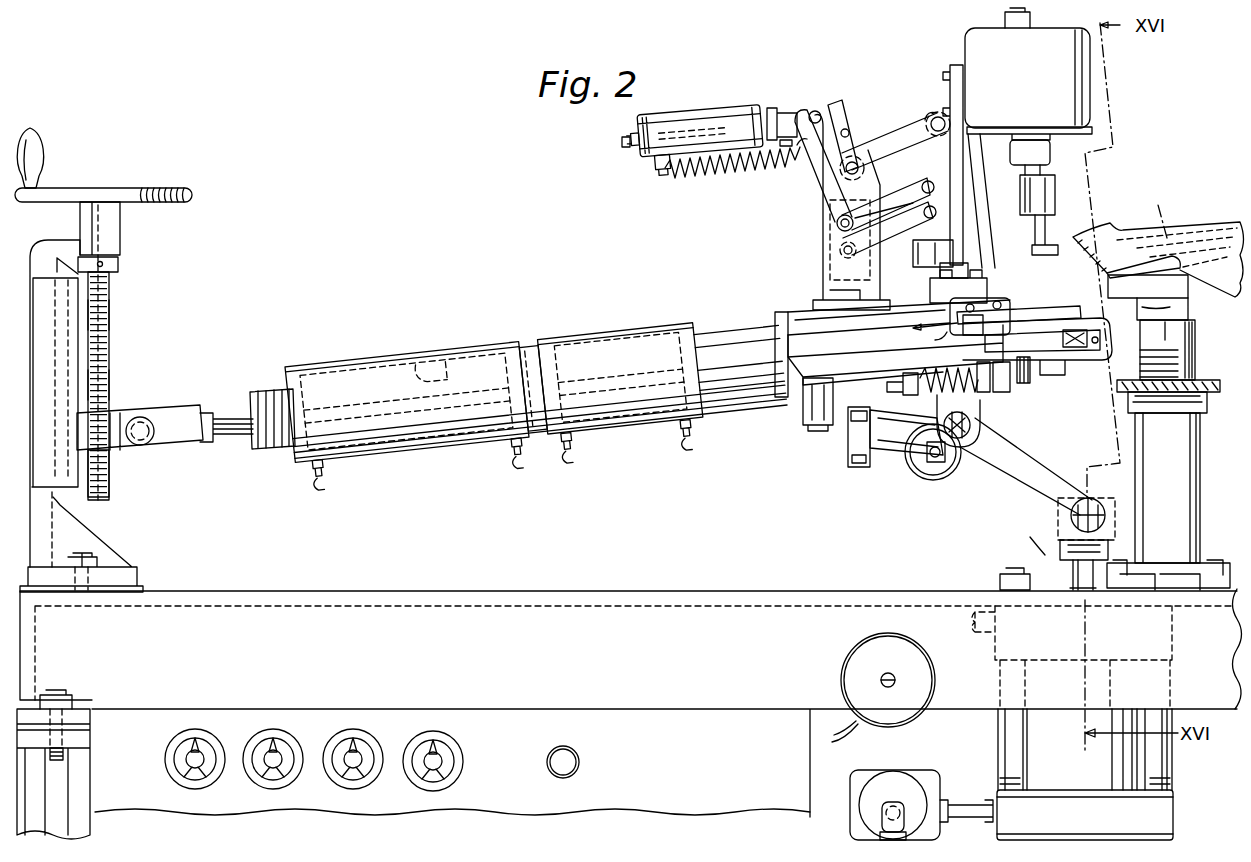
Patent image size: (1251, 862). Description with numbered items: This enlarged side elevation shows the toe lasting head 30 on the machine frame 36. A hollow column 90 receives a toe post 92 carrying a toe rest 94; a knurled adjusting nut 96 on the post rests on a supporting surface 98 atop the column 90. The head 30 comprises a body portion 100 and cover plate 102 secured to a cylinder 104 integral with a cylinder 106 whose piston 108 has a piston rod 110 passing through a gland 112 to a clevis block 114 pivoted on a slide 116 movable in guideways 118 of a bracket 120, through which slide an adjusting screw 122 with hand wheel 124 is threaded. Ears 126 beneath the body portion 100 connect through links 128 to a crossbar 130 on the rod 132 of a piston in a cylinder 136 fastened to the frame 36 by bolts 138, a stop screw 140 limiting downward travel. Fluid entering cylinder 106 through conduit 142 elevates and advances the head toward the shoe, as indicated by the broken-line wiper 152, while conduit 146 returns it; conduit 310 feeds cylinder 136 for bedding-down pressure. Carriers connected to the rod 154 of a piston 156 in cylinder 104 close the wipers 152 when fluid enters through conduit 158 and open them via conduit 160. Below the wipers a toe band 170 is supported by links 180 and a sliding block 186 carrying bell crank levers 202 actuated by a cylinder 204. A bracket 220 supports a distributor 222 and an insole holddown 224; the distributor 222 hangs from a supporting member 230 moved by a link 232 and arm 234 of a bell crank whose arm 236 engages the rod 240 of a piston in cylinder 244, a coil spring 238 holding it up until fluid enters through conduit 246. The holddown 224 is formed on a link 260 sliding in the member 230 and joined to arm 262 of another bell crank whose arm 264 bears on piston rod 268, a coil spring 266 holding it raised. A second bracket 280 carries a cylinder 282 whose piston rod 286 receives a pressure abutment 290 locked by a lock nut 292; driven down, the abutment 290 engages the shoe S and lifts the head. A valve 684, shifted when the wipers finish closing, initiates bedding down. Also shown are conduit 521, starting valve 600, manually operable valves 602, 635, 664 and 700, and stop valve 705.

The cutting head support block 30 is at (787, 407).
The base 36 is at (573, 659).
The column 90 is at (1150, 445).
The upper column member 92 is at (1193, 348).
The sheet support block 94 is at (1179, 272).
The flange 96 is at (1220, 382).
The collar 98 is at (1198, 400).
The slide carriage 100 is at (862, 351).
The upper slide 102 is at (867, 328).
The cylinder housing 104 is at (618, 362).
The cylinder housing 106 is at (535, 373).
The piston 108 is at (439, 346).
The shaft 110 is at (224, 404).
The knurled collar 112 is at (250, 390).
The clamp arm 114 is at (162, 402).
The clamp screw 116 is at (136, 452).
The adjusting screw 118 is at (98, 330).
The screw upper portion 120 is at (106, 302).
The screw lower portion 122 is at (106, 368).
The hand crank 124 is at (166, 198).
The link 126 is at (976, 440).
The link end 128 is at (1030, 535).
The ball joint 130 is at (1108, 503).
The ball joint block 132 is at (1106, 553).
The hydraulic cylinder 136 is at (1178, 762).
The mounting bolts 138 is at (1008, 571).
The rod 140 is at (1072, 572).
The mounting foot 142 is at (536, 451).
The mounting foot 146 is at (337, 472).
The guide 152 is at (1084, 318).
The piston rod 154 is at (736, 333).
The piston 156 is at (541, 361).
The mounting foot 158 is at (587, 445).
The mounting foot 160 is at (706, 432).
The knife 170 is at (1092, 344).
The knife holder 180 is at (1077, 370).
The bracket 186 is at (848, 438).
The arm 202 is at (872, 470).
The roller 204 is at (938, 476).
The bracket 220 is at (817, 254).
The block 222 is at (913, 258).
The block 224 is at (995, 276).
The link 230 is at (888, 198).
The link 232 is at (866, 239).
The pivot 234 is at (884, 204).
The lever arm 236 is at (812, 202).
The spring 238 is at (716, 179).
The bracket 240 is at (803, 106).
The dashpot cylinder 244 is at (688, 106).
The fitting 246 is at (624, 153).
The stem 260 is at (1010, 150).
The arm 262 is at (933, 122).
The link 264 is at (842, 116).
The pivot hole 266 is at (848, 132).
The pivot 268 is at (816, 105).
The rod 280 is at (1006, 183).
The solenoid 282 is at (1000, 69).
The cylinder 286 is at (1018, 170).
The foot 290 is at (1032, 251).
The block 292 is at (1020, 214).
The valve 310 is at (966, 660).
The motor 521 is at (960, 804).
The pulley 600 is at (842, 674).
The control knob 602 is at (202, 732).
The control knob 635 is at (298, 732).
The control knob 664 is at (376, 732).
The pointer 684 is at (947, 336).
The control knob 700 is at (450, 732).
The indicator 705 is at (550, 758).
The sheet S is at (1201, 224).